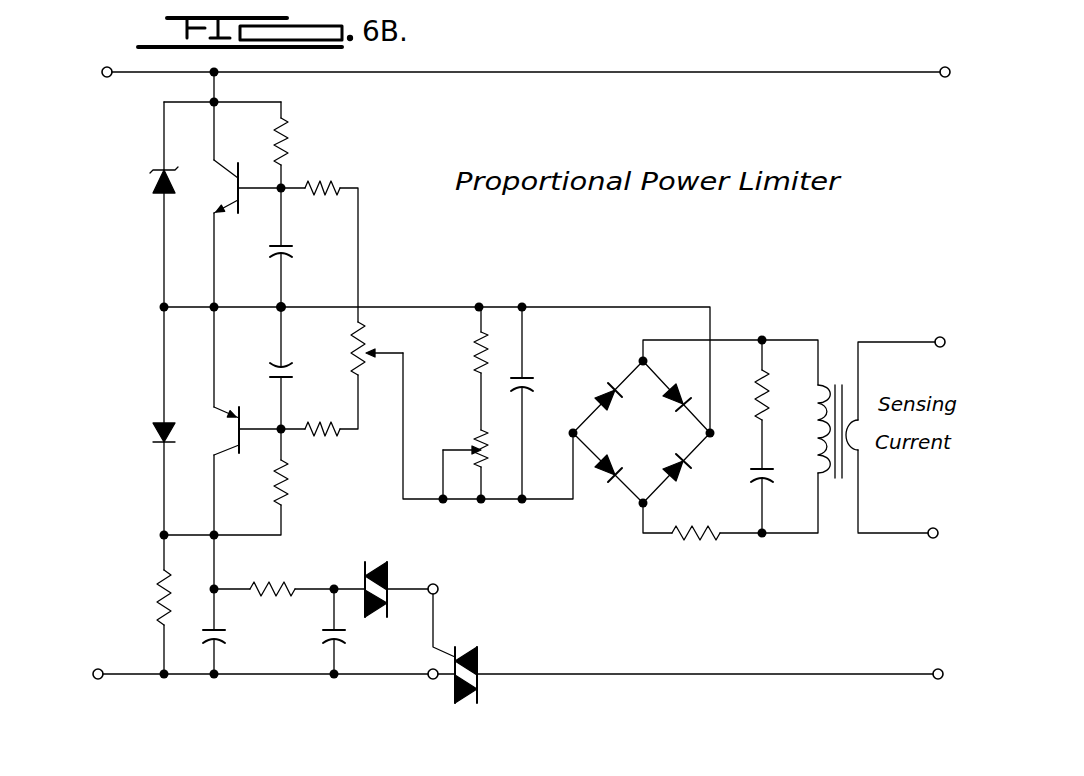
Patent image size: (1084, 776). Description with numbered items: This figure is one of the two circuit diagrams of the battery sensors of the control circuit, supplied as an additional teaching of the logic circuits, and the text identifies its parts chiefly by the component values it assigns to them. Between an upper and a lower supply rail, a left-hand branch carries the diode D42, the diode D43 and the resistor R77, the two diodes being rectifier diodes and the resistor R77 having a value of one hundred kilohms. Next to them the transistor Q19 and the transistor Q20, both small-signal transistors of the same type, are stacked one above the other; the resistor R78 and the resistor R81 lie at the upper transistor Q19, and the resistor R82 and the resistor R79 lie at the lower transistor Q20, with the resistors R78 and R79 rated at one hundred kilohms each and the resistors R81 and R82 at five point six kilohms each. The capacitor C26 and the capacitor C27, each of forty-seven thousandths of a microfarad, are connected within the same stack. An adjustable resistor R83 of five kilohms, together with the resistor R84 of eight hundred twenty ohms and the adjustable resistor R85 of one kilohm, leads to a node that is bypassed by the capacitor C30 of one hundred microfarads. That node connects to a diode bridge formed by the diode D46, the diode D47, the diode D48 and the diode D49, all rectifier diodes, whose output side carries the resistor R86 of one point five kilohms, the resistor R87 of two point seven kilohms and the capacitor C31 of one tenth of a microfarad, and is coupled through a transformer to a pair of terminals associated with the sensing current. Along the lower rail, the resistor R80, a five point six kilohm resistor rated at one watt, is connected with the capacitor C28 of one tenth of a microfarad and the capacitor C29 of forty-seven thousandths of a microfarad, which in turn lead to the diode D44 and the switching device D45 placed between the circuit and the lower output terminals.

The diode D42 is at (153, 183).
The diode D43 is at (153, 426).
The diode D44 is at (373, 562).
The diode D45 is at (470, 648).
The diode D46 is at (606, 386).
The diode D47 is at (627, 451).
The diode D48 is at (683, 473).
The diode D49 is at (676, 385).
The transistor Q19 is at (228, 170).
The transistor Q20 is at (230, 416).
The resistor R77 is at (162, 578).
The resistor R78 is at (290, 137).
The resistor R79 is at (289, 480).
The resistor R80 is at (292, 576).
The resistor R81 is at (326, 180).
The resistor R82 is at (316, 423).
The resistor R83 is at (367, 334).
The resistor R84 is at (473, 360).
The resistor R85 is at (476, 440).
The resistor R86 is at (700, 540).
The resistor R87 is at (769, 392).
The capacitor C26 is at (290, 253).
The capacitor C27 is at (287, 367).
The capacitor C28 is at (229, 639).
The capacitor C29 is at (348, 636).
The capacitor C30 is at (537, 378).
The capacitor C31 is at (770, 480).